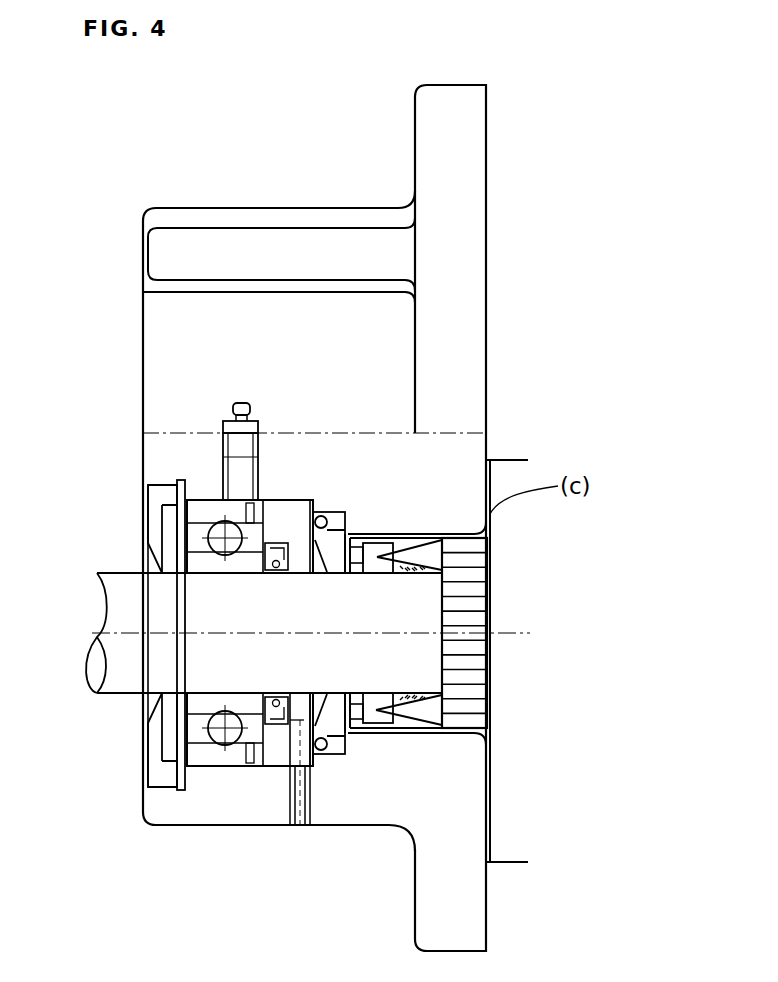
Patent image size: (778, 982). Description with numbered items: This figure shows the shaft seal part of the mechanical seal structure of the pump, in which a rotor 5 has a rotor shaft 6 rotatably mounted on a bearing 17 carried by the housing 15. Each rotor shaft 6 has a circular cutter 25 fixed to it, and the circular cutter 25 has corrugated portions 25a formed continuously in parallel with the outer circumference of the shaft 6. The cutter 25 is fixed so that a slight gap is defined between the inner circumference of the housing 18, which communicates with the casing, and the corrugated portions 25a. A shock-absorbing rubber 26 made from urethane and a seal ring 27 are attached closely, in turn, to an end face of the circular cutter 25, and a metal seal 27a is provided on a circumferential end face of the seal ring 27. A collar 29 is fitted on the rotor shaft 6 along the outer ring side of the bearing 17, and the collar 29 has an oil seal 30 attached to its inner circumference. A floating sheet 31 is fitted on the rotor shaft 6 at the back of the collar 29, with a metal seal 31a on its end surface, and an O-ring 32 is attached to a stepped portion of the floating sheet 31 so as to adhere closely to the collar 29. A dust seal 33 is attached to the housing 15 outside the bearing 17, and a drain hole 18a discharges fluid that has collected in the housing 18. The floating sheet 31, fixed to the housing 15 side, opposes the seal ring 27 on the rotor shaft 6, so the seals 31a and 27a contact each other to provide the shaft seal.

The rotor 5 is at (508, 862).
The rotor shaft 6 is at (132, 585).
The housing 15 is at (420, 118).
The bearing 17 is at (210, 503).
The housing 18 is at (413, 537).
The drain hole 18a is at (297, 768).
The circular cutter 25 is at (490, 557).
The corrugated portions 25a is at (490, 600).
The shock-absorbing rubber 26 is at (428, 713).
The seal ring 27 is at (393, 722).
The metal seal 27a is at (357, 535).
The collar 29 is at (277, 760).
The oil seal 30 is at (276, 720).
The floating sheet 31 is at (333, 753).
The metal seal 31a is at (348, 734).
The O-ring 32 is at (322, 510).
The dust seal 33 is at (150, 527).